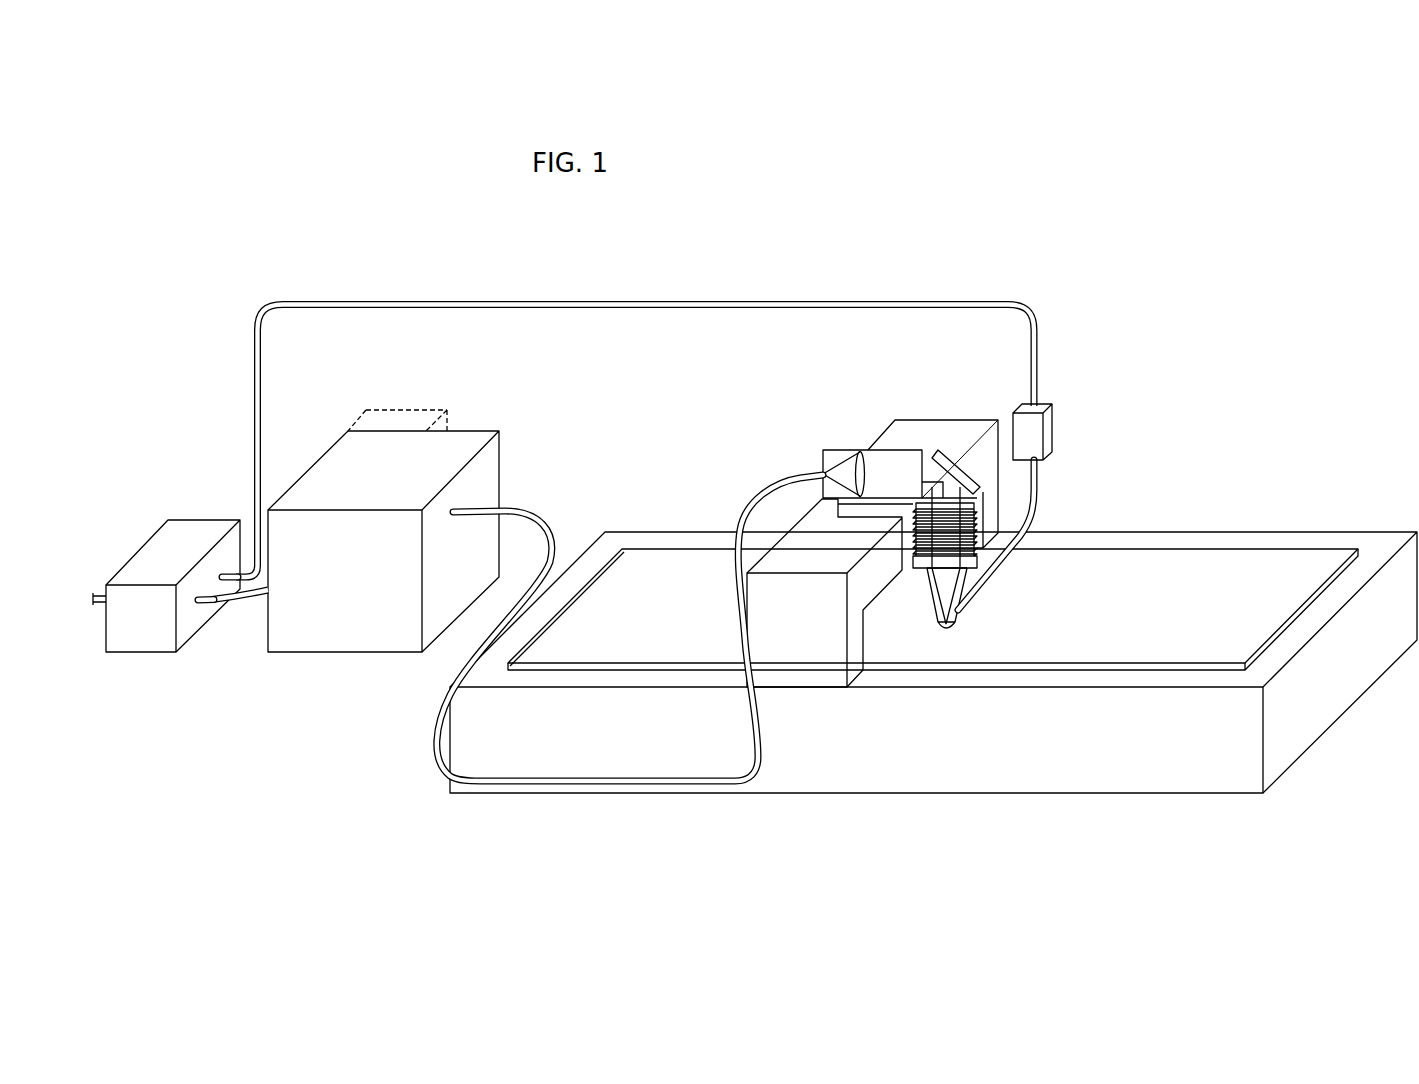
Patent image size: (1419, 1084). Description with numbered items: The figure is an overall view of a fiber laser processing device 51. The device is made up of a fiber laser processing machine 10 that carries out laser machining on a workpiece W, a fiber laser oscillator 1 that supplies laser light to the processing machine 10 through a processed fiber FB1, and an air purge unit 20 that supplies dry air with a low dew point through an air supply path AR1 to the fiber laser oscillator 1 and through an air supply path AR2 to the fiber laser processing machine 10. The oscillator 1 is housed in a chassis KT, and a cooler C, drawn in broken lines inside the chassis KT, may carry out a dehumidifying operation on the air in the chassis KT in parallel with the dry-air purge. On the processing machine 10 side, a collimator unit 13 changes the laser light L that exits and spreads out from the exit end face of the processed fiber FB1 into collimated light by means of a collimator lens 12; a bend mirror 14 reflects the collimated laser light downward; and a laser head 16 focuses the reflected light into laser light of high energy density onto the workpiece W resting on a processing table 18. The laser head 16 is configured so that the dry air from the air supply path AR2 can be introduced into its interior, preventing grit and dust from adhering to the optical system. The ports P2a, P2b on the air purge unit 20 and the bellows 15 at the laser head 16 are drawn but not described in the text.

The fiber laser processing device 51 is at (755, 511).
The fiber laser oscillator 1 is at (572, 488).
The chassis KT is at (461, 431).
The cooler C is at (408, 406).
The air purge unit 20 is at (162, 513).
The coolant port P2a is at (222, 570).
The coolant port P2b is at (198, 606).
The air supply path AR1 is at (248, 603).
The air supply path AR2 is at (683, 303).
The processed fiber FB1 is at (626, 787).
The fiber laser processing machine 10 is at (933, 609).
The processing table 18 is at (1155, 768).
The workpiece W is at (1148, 567).
The collimator lens 12 is at (860, 452).
The collimator unit 13 is at (822, 452).
The laser light L is at (838, 462).
The bend mirror 14 is at (943, 452).
The bellows 15 is at (922, 578).
The laser head 16 is at (960, 613).